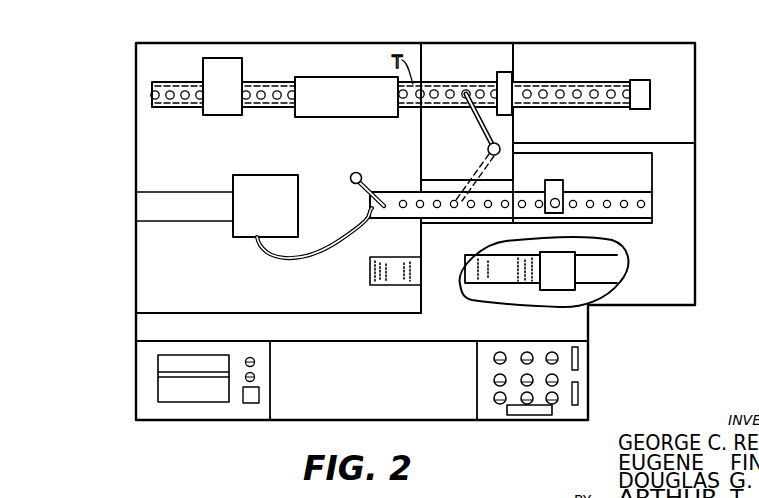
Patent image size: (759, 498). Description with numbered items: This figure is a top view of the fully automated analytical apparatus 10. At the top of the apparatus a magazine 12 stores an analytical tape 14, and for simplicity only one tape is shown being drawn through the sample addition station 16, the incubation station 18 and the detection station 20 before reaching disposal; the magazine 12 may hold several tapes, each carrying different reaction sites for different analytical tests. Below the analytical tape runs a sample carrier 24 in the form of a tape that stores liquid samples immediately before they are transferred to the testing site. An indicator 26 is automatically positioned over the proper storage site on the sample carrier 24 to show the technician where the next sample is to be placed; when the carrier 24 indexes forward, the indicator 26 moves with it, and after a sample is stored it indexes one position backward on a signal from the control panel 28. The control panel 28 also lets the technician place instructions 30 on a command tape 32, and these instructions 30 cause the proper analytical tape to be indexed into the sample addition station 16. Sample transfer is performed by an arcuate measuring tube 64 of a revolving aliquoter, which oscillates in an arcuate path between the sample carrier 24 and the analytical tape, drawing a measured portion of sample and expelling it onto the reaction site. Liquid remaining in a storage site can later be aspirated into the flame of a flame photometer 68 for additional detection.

The analytical apparatus 10 is at (126, 183).
The magazine 12 is at (638, 90).
The analytical tape 14 is at (540, 80).
The sample addition station 16 is at (487, 172).
The incubation station 18 is at (343, 102).
The detection station 20 is at (222, 106).
The sample carrier 24 is at (607, 196).
The indicator 26 is at (555, 180).
The control panel 28 is at (557, 380).
The instructions 30 is at (500, 276).
The command tape 32 is at (493, 256).
The arcuate measuring tube 64 is at (478, 128).
The flame photometer 68 is at (240, 230).